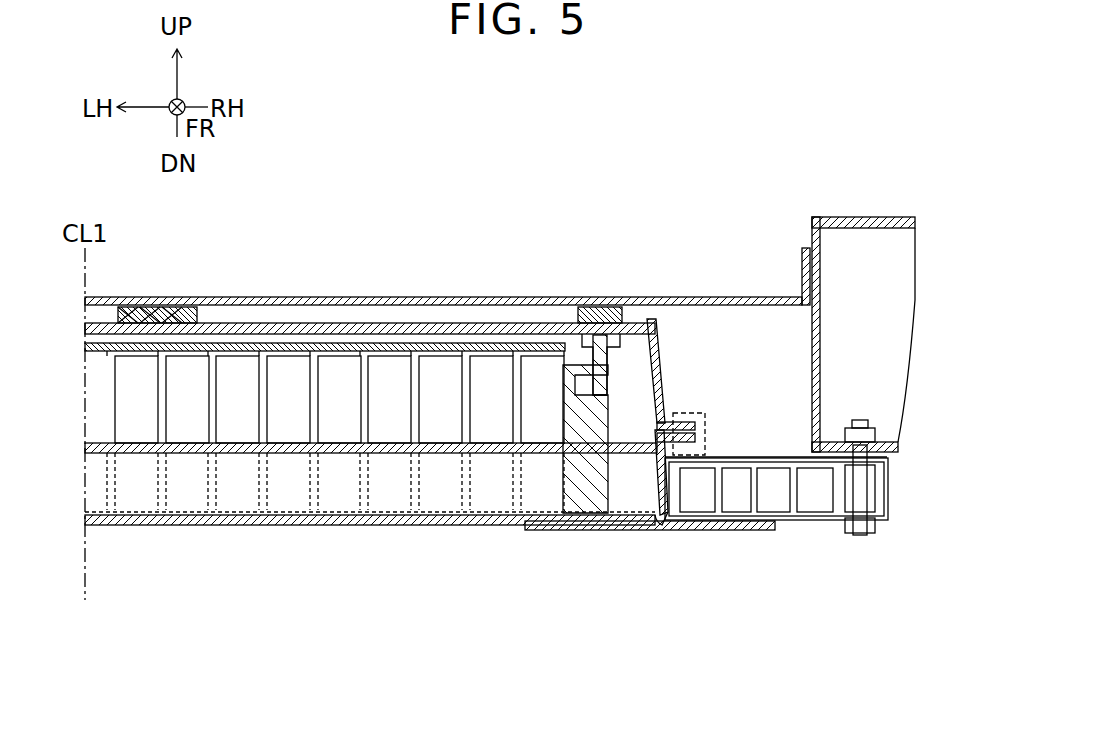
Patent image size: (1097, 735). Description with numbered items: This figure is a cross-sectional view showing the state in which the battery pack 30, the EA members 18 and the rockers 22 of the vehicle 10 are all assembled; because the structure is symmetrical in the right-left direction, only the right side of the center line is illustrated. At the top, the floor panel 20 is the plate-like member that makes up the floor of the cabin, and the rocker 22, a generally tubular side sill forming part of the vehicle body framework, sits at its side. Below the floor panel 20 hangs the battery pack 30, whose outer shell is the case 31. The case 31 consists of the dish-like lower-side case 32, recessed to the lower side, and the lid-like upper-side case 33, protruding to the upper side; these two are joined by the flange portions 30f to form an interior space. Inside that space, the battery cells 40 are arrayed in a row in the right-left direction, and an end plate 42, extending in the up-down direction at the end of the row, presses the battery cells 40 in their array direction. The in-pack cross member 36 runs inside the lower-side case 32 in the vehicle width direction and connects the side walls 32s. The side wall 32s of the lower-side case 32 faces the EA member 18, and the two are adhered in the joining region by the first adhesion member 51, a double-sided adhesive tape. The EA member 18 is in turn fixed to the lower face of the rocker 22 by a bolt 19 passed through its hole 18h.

The vehicle 10 is at (808, 120).
The floor panel 20 is at (316, 297).
The battery pack 30 is at (700, 340).
The flange portions 30f is at (707, 427).
The rockers 22 is at (848, 217).
The case 31 is at (227, 627).
The lower-side case 32 is at (102, 530).
The upper-side case 33 is at (216, 527).
The side walls 32s is at (678, 528).
The in-pack cross members 36 is at (448, 477).
The battery cells 40 is at (344, 423).
The end plates 42 is at (578, 415).
The first adhesion members 51 is at (728, 530).
The EA members 18 is at (802, 521).
The holes 18h is at (872, 498).
The bolts 19 is at (858, 536).